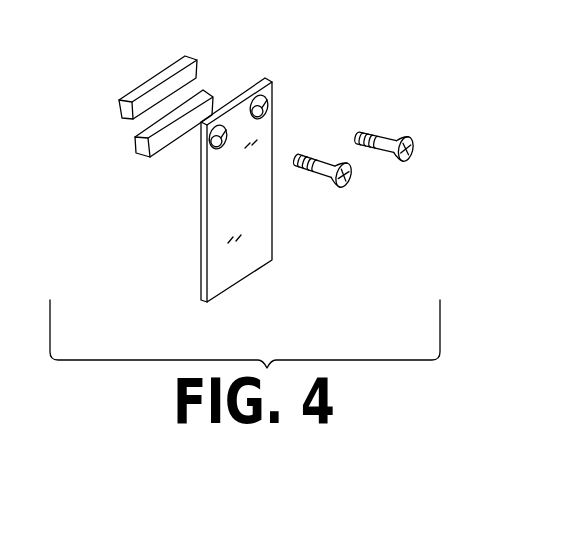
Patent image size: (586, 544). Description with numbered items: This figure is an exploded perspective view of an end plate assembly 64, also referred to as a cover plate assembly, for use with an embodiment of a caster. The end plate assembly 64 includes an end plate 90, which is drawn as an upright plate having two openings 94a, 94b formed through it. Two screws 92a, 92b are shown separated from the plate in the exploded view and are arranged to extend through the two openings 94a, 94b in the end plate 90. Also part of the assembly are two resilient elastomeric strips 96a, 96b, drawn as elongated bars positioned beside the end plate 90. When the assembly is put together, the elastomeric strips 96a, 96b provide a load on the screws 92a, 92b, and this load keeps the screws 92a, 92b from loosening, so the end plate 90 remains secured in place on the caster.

The end plate assembly 64 is at (328, 62).
The end plate 90 is at (248, 253).
The screw 92a is at (384, 140).
The screw 92b is at (317, 181).
The opening 94a is at (266, 113).
The opening 94b is at (218, 149).
The resilient elastomeric strip 96a is at (155, 82).
The resilient elastomeric strip 96b is at (140, 148).